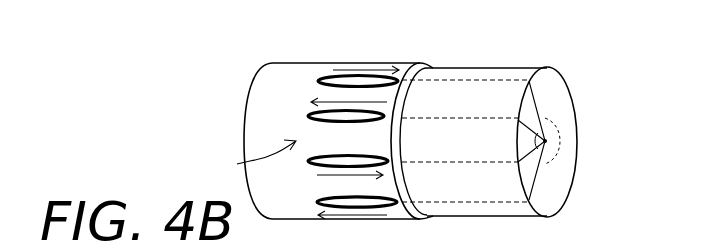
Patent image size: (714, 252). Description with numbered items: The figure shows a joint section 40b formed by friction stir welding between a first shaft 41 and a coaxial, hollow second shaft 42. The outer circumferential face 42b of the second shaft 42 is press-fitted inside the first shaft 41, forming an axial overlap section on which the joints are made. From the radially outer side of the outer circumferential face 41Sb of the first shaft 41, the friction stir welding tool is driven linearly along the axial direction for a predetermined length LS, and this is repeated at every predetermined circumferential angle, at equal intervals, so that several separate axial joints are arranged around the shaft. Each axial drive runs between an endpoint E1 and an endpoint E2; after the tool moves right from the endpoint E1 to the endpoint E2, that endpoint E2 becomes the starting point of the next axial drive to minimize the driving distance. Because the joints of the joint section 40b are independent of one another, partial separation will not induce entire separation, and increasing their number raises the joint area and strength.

The first shaft 41 is at (369, 55).
The outer circumferential face of the first shaft 41Sb is at (287, 78).
The second shaft 42 is at (464, 57).
The outer circumferential face of the second shaft 42b is at (508, 78).
The joint section 40b is at (241, 157).
The endpoint E1 is at (308, 114).
The endpoint E2 is at (392, 120).
The predetermined length LS is at (386, 155).